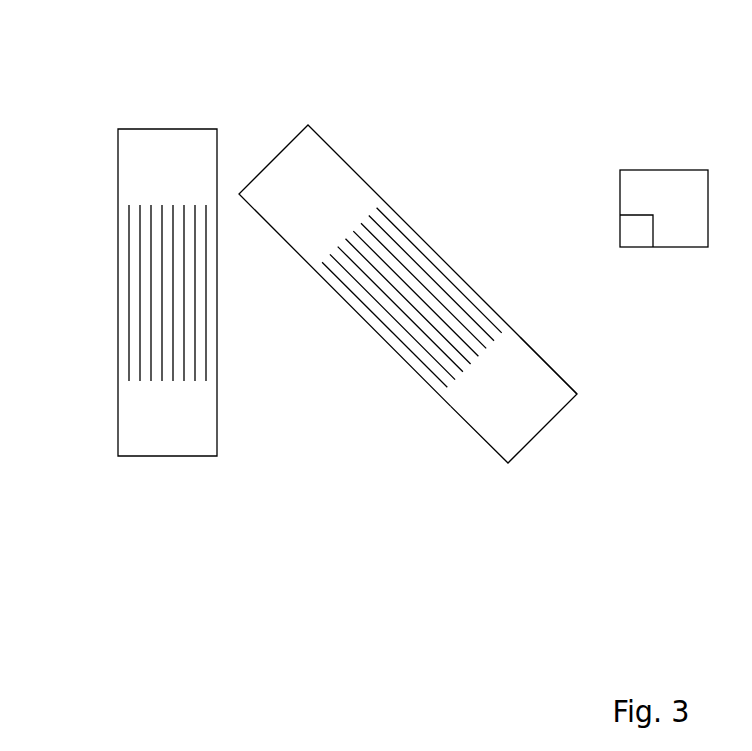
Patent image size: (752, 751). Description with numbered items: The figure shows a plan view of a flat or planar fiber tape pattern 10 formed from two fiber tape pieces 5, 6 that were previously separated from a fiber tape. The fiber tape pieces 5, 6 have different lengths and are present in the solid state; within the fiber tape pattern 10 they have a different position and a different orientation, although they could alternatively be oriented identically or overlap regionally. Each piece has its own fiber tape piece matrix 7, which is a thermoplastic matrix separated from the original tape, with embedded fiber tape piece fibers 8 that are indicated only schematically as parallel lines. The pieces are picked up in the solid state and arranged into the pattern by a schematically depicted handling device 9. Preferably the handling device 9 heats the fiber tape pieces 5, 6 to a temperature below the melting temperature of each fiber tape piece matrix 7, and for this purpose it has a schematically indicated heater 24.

The fiber tape pattern 10 is at (124, 210).
The fiber tape piece 6 is at (118, 165).
The fiber tape piece 5 is at (348, 165).
The fiber tape piece fibers 8 is at (130, 323).
The fiber tape piece matrix 7 is at (127, 418).
The handling device 9 is at (681, 178).
The heater 24 is at (640, 240).